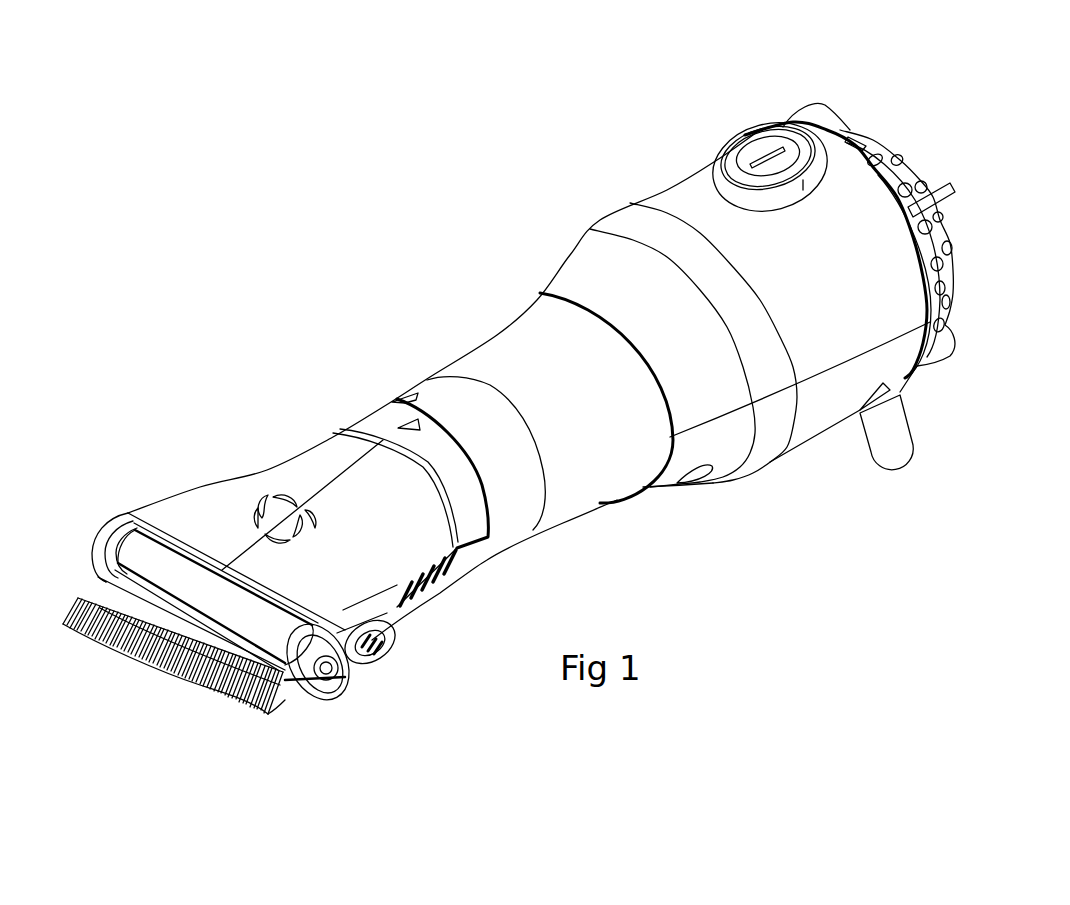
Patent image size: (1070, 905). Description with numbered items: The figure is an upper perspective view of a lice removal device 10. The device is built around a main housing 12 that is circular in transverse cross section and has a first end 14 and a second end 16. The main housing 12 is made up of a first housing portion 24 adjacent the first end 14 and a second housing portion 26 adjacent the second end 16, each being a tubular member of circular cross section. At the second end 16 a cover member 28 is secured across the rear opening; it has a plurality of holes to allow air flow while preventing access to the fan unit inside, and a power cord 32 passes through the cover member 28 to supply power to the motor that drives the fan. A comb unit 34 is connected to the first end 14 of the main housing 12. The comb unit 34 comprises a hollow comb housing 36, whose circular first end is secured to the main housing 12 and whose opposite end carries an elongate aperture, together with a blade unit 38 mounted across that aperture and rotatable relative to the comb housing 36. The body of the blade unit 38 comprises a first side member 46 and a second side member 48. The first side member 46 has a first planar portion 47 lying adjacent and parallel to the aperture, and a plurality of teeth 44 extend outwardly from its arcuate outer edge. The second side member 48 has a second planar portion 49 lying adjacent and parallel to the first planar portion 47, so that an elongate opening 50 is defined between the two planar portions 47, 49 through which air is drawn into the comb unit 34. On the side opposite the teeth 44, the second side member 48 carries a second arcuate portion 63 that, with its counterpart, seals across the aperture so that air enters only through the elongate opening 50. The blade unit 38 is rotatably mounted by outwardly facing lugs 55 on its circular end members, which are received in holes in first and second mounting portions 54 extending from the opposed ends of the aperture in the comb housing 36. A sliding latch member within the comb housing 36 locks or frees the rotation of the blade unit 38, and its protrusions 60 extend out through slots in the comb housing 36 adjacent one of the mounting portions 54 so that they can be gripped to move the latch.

The lice removal device 10 is at (261, 214).
The main housing 12 is at (567, 263).
The first end 14 is at (383, 400).
The second end 16 is at (860, 128).
The first housing portion 24 is at (520, 357).
The second housing portion 26 is at (680, 195).
The cover member 28 is at (937, 233).
The power cord 32 is at (897, 440).
The comb unit 34 is at (445, 612).
The comb housing 36 is at (240, 490).
The blade unit 38 is at (270, 712).
The teeth 44 is at (123, 660).
The first side member 46 is at (287, 693).
The first planar portion 47 is at (220, 700).
The second side member 48 is at (262, 620).
The second planar portion 49 is at (173, 590).
The elongate opening 50 is at (173, 670).
The mounting portions 54 is at (313, 693).
The lugs 55 is at (338, 680).
The protrusions 60 is at (380, 657).
The second arcuate portion 63 is at (142, 553).